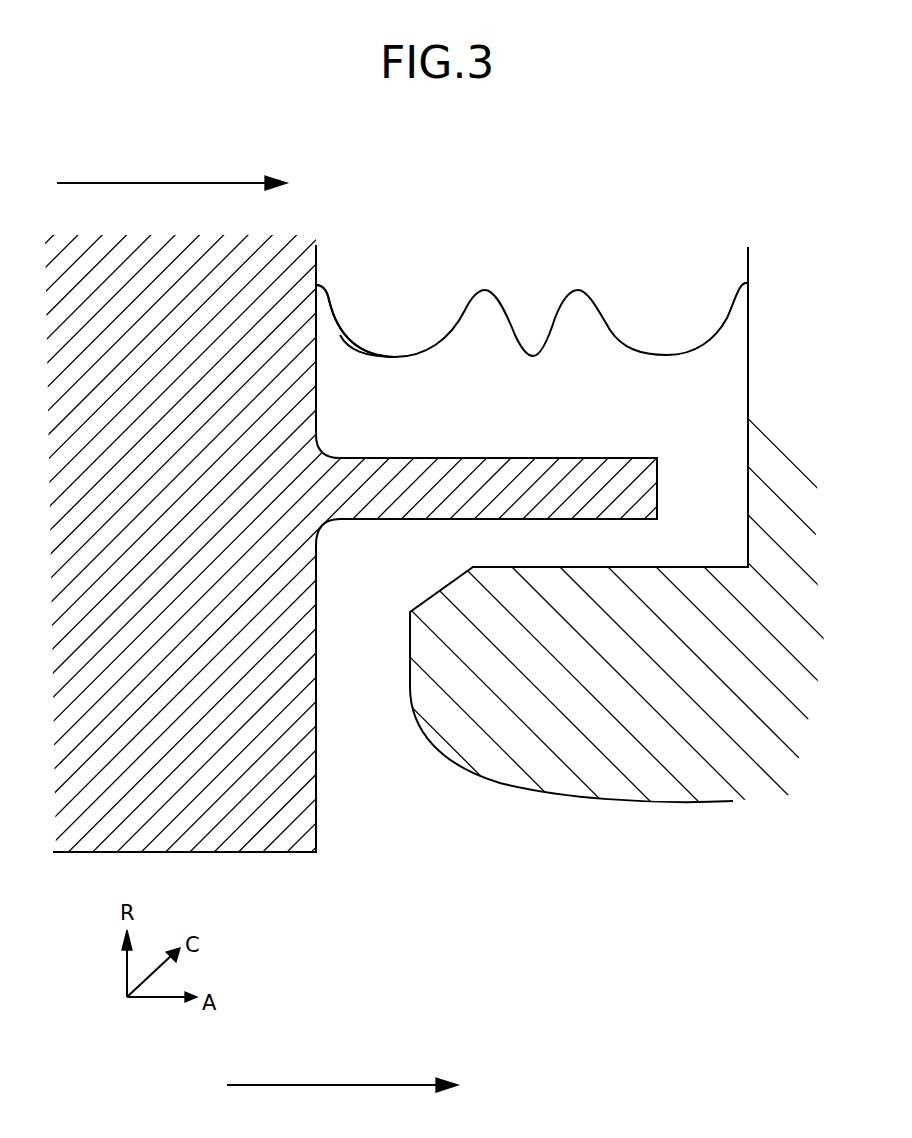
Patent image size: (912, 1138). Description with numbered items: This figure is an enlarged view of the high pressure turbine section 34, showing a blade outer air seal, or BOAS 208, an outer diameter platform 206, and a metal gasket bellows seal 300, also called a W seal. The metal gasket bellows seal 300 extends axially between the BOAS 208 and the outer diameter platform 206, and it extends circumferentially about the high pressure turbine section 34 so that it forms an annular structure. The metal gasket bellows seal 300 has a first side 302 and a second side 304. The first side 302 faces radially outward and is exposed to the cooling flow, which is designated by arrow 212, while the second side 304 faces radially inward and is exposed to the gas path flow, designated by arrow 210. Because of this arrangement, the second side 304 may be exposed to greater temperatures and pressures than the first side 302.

The high pressure turbine section 34 is at (135, 50).
The outer diameter platform 206 is at (617, 775).
The BOAS 208 is at (73, 792).
The gas path flow arrow 210 is at (281, 1085).
The cooling flow arrow 212 is at (110, 183).
The metal gasket bellows seal 300 is at (432, 347).
The first side 302 is at (337, 316).
The second side 304 is at (354, 345).